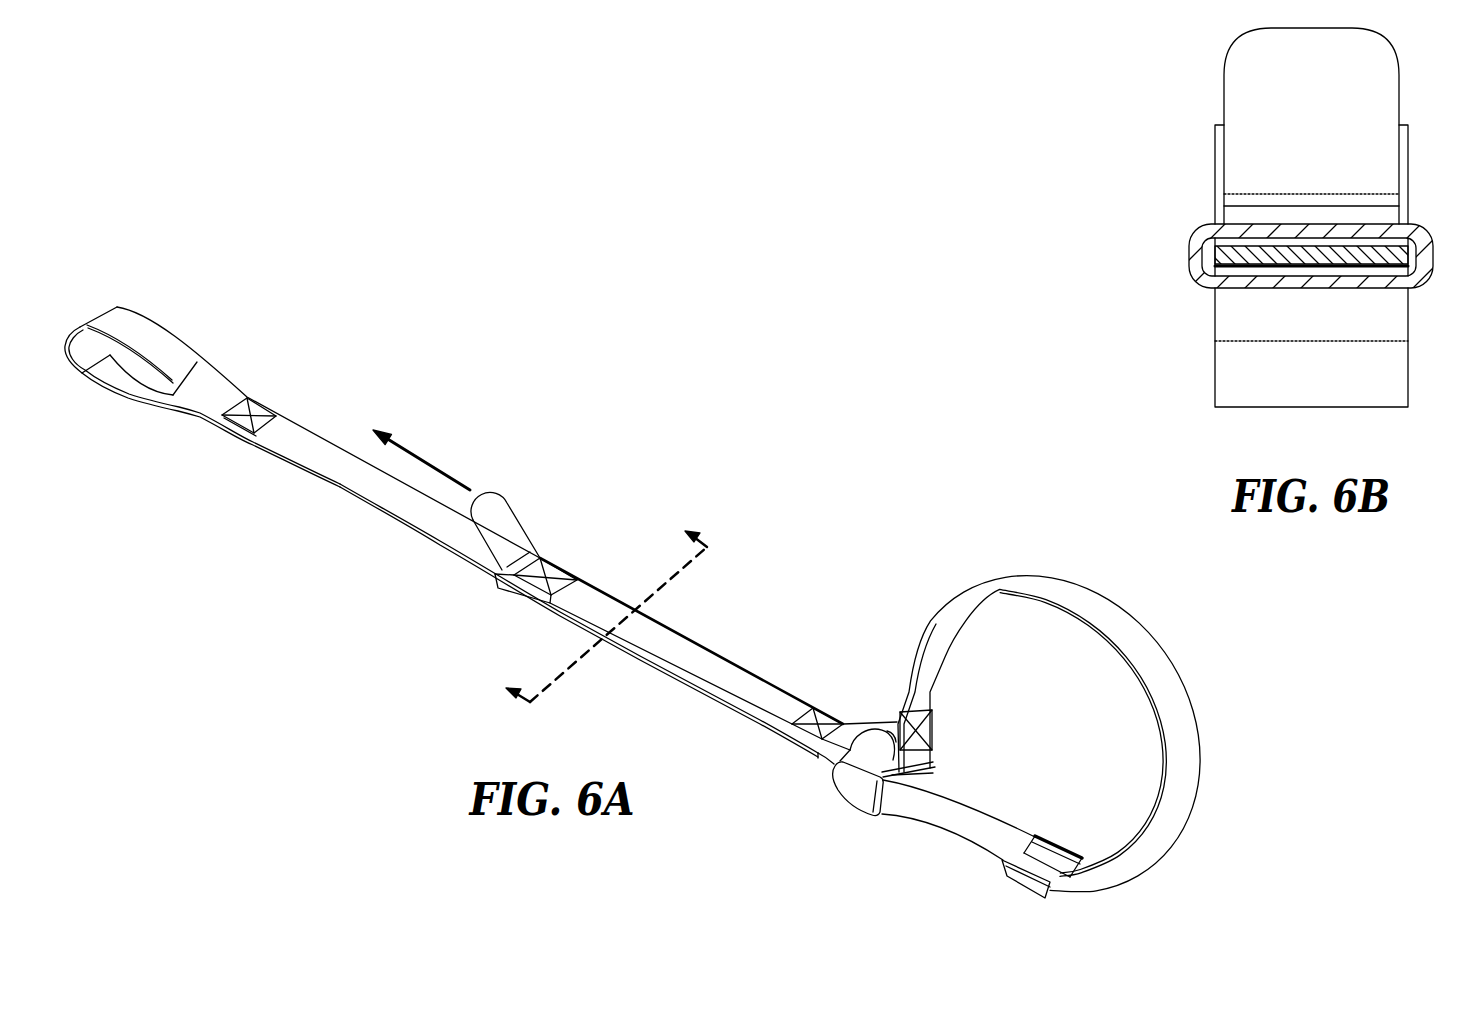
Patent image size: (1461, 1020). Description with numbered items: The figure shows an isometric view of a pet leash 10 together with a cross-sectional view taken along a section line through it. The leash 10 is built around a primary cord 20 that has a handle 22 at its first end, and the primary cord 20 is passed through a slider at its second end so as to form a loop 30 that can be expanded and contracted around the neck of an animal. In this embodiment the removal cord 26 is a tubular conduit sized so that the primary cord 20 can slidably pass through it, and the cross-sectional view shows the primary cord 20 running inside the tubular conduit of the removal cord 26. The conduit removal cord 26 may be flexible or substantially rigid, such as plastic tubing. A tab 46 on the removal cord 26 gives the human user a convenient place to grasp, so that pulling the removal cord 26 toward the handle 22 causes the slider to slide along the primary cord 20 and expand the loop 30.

In FIG. 6A, the leash 10 is at (712, 372).
In FIG. 6A, the primary cord 20 is at (433, 542).
In FIG. 6B, the primary cord 20 is at (1238, 256).
In FIG. 6A, the handle 22 is at (147, 317).
In FIG. 6B, the handle 22 is at (1215, 379).
In FIG. 6A, the removal cord 26 is at (721, 658).
In FIG. 6B, the removal cord 26 is at (1205, 227).
In FIG. 6A, the loop 30 is at (1007, 575).
In FIG. 6A, the tab 46 is at (507, 508).
In FIG. 6B, the tab 46 is at (1224, 97).